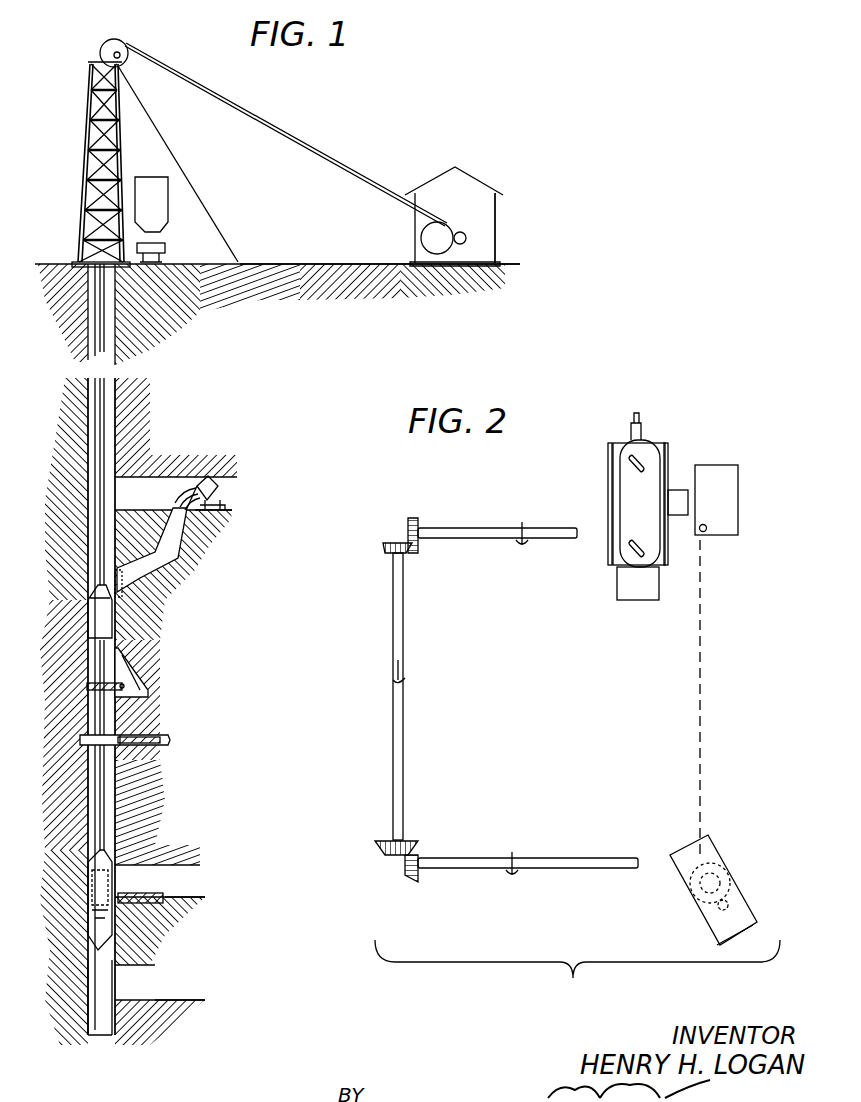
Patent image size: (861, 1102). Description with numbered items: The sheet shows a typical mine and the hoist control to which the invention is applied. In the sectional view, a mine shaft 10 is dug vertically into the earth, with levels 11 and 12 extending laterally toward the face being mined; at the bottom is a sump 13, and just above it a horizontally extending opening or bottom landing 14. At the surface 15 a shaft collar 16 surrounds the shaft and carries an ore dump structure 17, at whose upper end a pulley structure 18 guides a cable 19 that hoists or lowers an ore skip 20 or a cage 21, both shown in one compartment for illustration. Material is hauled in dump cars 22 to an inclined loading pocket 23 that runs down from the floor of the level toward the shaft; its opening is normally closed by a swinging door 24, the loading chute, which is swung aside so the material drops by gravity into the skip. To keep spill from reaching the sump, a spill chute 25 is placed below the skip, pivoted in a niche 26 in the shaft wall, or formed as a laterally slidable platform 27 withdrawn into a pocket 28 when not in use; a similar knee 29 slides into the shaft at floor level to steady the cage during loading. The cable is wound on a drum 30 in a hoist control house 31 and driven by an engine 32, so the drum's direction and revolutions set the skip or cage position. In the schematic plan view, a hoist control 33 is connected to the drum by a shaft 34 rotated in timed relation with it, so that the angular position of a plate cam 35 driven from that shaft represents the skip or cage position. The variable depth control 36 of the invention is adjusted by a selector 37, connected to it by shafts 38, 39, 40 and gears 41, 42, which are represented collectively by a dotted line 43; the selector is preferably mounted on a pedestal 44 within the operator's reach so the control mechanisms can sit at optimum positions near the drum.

In FIG. 1, the mine shaft 10 is at (115, 398).
In FIG. 1, the level 11 is at (232, 508).
In FIG. 1, the level 12 is at (190, 897).
In FIG. 1, the sump 13 is at (100, 1022).
In FIG. 1, the bottom landing 14 is at (168, 1000).
In FIG. 1, the surface 15 is at (268, 262).
In FIG. 1, the shaft collar 16 is at (75, 262).
In FIG. 1, the ore dump structure 17 is at (122, 150).
In FIG. 1, the pulley structure 18 is at (118, 42).
In FIG. 1, the cable 19 is at (280, 96).
In FIG. 1, the ore skip 20 is at (98, 622).
In FIG. 1, the cage 21 is at (90, 878).
In FIG. 1, the dump cars 22 is at (212, 488).
In FIG. 1, the loading pocket 23 is at (170, 560).
In FIG. 1, the swinging door 24 is at (125, 600).
In FIG. 1, the spill chute 25 is at (110, 668).
In FIG. 1, the niche 26 is at (130, 687).
In FIG. 1, the laterally slidable platform 27 is at (140, 737).
In FIG. 1, the pocket 28 is at (165, 741).
In FIG. 1, the knee 29 is at (140, 895).
In FIG. 1, the drum 30 is at (447, 223).
In FIG. 1, the hoist control house 31 is at (496, 232).
In FIG. 1, the engine 32 is at (466, 238).
In FIG. 2, the hoist control 33 is at (620, 494).
In FIG. 2, the shaft 34 is at (640, 418).
In FIG. 2, the plate cam 35 is at (668, 455).
In FIG. 2, the variable depth control 36 is at (730, 490).
In FIG. 2, the selector 37 is at (682, 878).
In FIG. 2, the shaft 38 is at (590, 845).
In FIG. 2, the shaft 39 is at (404, 752).
In FIG. 2, the shaft 40 is at (480, 540).
In FIG. 2, the gear 41 is at (412, 843).
In FIG. 2, the gear 42 is at (385, 542).
In FIG. 2, the dotted line 43 is at (703, 700).
In FIG. 2, the pedestal 44 is at (713, 907).